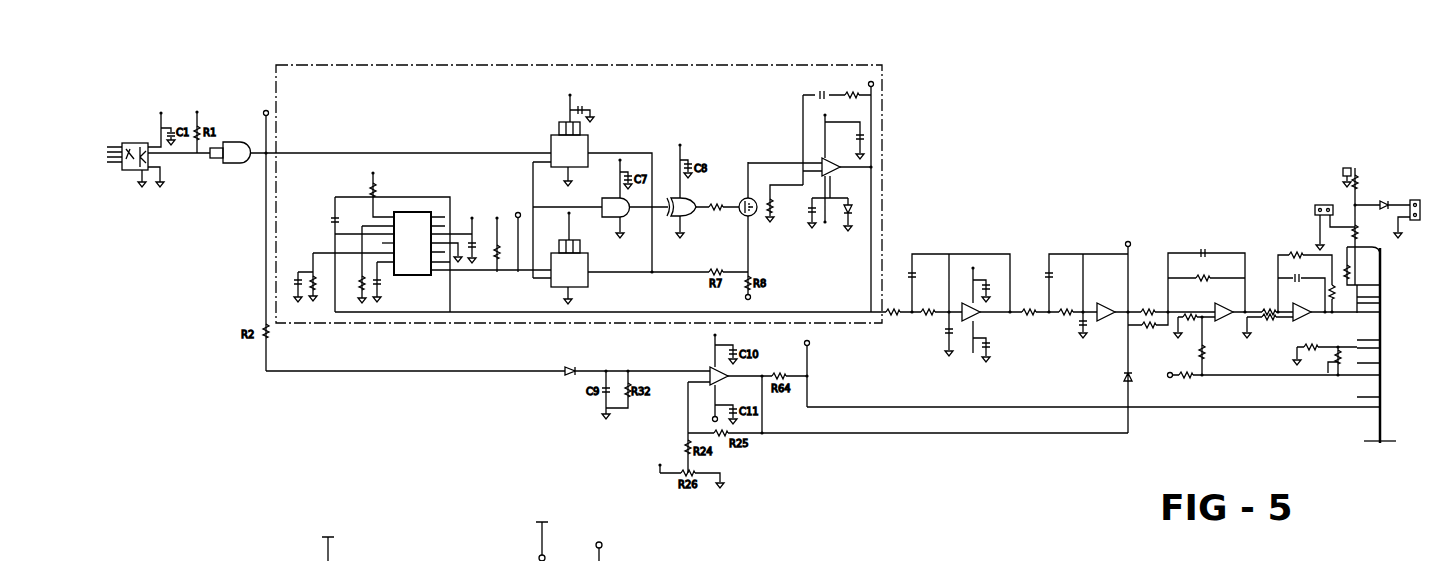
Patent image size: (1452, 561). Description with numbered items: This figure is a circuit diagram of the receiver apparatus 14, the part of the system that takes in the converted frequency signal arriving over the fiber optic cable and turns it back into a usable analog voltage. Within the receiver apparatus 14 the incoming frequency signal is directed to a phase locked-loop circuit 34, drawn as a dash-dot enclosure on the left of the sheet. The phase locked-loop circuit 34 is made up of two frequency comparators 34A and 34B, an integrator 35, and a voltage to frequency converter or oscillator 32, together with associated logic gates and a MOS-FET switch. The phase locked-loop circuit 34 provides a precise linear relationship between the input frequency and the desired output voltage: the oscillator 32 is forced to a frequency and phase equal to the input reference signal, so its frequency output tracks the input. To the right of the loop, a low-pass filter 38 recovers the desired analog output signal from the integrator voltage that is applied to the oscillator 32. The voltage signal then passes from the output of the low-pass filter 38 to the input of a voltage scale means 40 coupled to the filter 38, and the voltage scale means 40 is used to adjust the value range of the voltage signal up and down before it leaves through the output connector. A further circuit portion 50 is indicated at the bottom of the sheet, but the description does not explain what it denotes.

The receiver apparatus 14 is at (1042, 117).
The voltage to frequency converter (oscillator) 32 is at (402, 194).
The phase locked-loop circuit 34 is at (873, 63).
The frequency comparator 34A is at (618, 130).
The frequency comparator 34B is at (607, 288).
The integrator 35 is at (791, 134).
The low-pass filter 38 is at (1014, 241).
The voltage scale means 40 is at (1238, 224).
The power supply circuit 50 is at (261, 559).